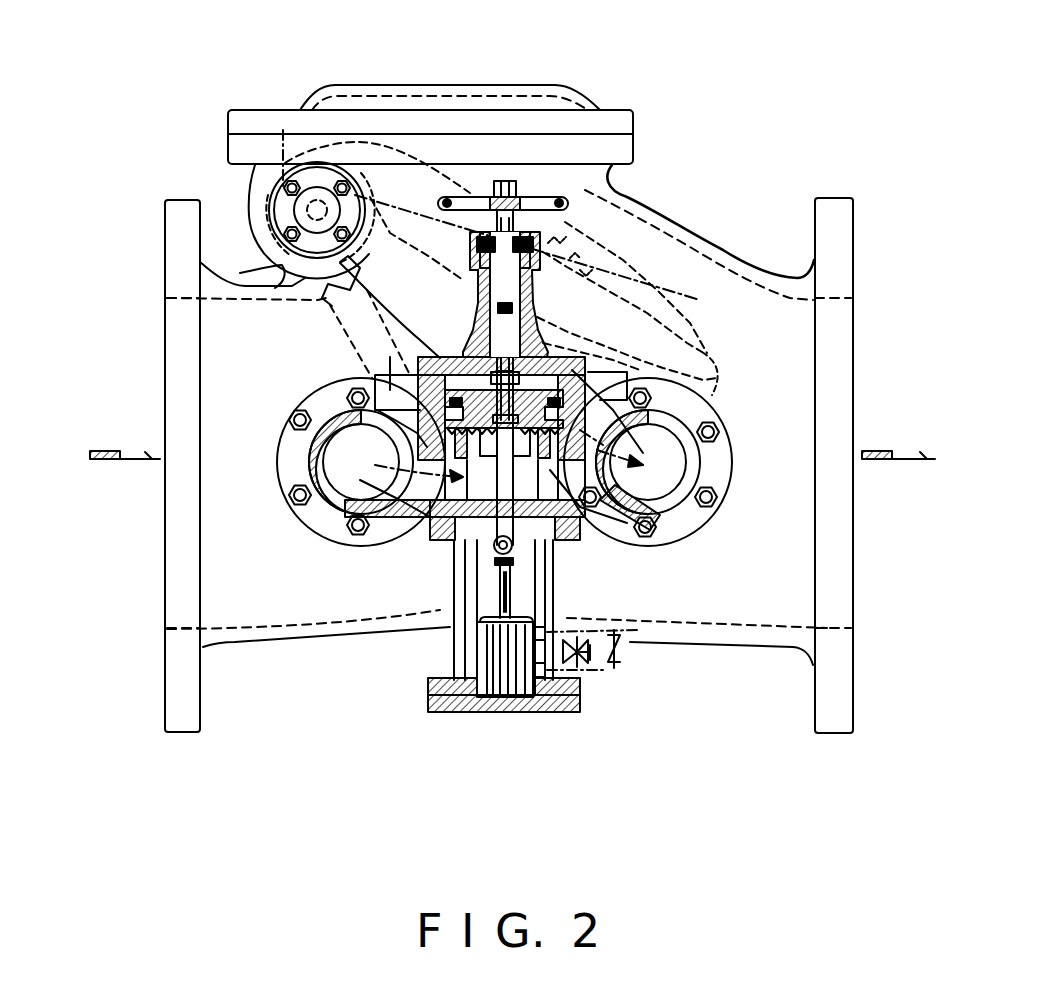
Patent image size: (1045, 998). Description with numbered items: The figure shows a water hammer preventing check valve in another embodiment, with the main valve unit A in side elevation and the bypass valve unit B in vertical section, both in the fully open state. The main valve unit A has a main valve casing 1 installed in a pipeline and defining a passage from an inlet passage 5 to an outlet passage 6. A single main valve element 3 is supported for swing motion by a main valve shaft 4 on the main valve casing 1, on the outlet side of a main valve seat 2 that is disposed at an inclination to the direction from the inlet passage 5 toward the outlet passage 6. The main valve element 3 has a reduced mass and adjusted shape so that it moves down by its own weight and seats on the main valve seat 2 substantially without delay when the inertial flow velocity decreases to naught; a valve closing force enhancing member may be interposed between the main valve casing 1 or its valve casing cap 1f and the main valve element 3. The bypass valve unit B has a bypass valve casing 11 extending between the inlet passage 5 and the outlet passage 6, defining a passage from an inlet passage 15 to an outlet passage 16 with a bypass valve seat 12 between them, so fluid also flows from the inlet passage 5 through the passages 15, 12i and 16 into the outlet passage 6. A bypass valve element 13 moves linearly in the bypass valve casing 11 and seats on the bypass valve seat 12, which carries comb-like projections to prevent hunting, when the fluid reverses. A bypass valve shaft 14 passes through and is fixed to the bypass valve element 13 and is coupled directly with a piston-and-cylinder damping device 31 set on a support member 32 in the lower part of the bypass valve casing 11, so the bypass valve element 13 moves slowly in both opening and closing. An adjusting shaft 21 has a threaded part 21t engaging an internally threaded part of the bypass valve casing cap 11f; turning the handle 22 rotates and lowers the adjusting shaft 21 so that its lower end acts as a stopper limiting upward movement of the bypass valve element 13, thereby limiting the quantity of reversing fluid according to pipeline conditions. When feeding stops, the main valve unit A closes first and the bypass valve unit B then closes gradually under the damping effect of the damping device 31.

The main valve casing 1 is at (740, 262).
The valve casing cap 1f is at (530, 88).
The main valve seat 2 is at (458, 290).
The main valve element 3 is at (713, 360).
The main valve shaft 4 is at (307, 207).
The inlet passage 5 is at (237, 513).
The outlet passage 6 is at (767, 510).
The bypass valve casing 11 is at (375, 380).
The bypass valve casing cap 11f is at (483, 343).
The bypass valve seat 12 is at (482, 450).
The passage 12i is at (507, 468).
The bypass valve element 13 is at (280, 250).
The bypass valve shaft 14 is at (578, 507).
The inlet passage 15 is at (403, 487).
The outlet passage 16 is at (677, 540).
The adjusting shaft 21 is at (513, 225).
The threaded part 21t is at (687, 210).
The handle 22 is at (442, 198).
The damping device 31 is at (503, 662).
The support member 32 is at (470, 692).
The main valve unit A is at (600, 347).
The bypass valve unit B is at (742, 266).